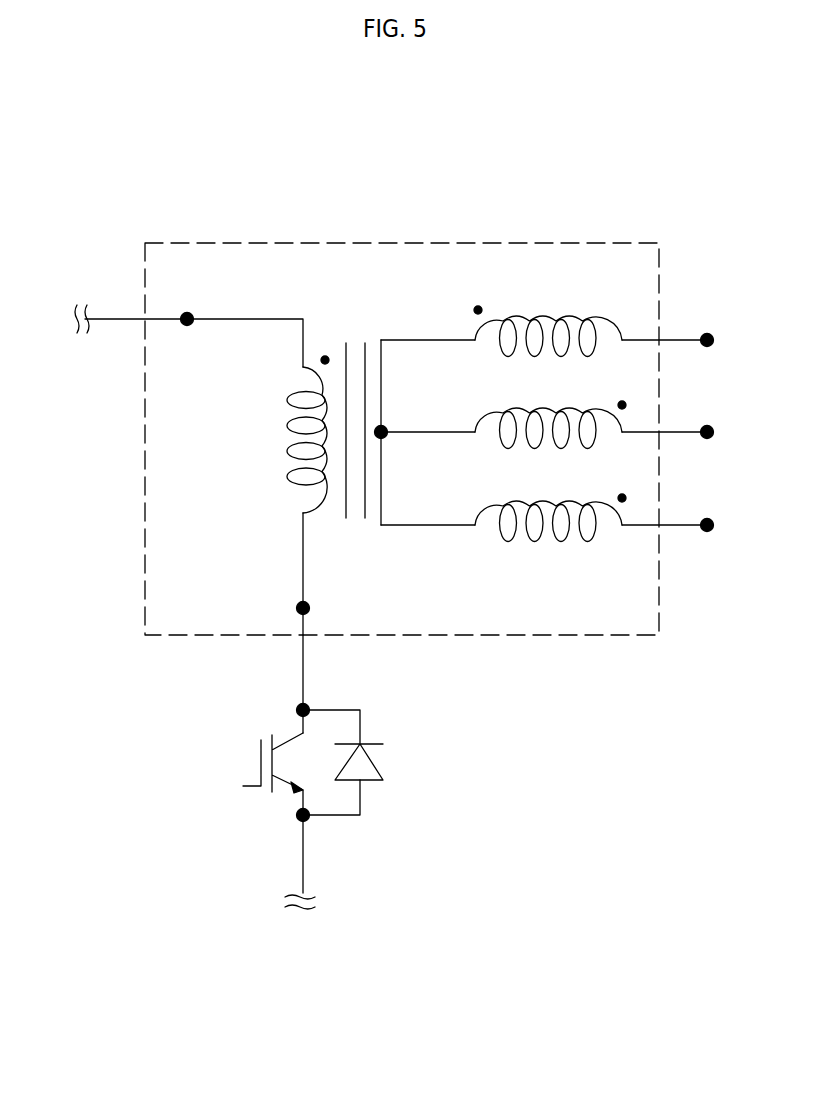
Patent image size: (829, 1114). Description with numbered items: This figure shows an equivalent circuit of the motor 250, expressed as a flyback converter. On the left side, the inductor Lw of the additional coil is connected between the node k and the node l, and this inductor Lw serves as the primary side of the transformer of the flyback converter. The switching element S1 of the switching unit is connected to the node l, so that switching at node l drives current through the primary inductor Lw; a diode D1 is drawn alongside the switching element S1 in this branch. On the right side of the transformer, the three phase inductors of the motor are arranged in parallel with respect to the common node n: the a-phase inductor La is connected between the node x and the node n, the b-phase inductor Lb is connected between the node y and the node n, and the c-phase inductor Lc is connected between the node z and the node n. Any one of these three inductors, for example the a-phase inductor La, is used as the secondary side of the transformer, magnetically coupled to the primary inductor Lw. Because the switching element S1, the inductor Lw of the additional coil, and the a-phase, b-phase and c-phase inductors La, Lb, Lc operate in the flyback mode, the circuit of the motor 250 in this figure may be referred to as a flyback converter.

The motor 250 is at (592, 242).
The node k is at (187, 347).
The node l is at (291, 608).
The node n is at (393, 409).
The node x is at (707, 316).
The node y is at (707, 406).
The node z is at (707, 498).
The inductor of the additional coil Lw is at (279, 434).
The a-phase inductor La is at (548, 311).
The b-phase inductor Lb is at (550, 403).
The c-phase inductor Lc is at (550, 496).
The switching element S1 is at (253, 771).
The diode D1 is at (386, 756).